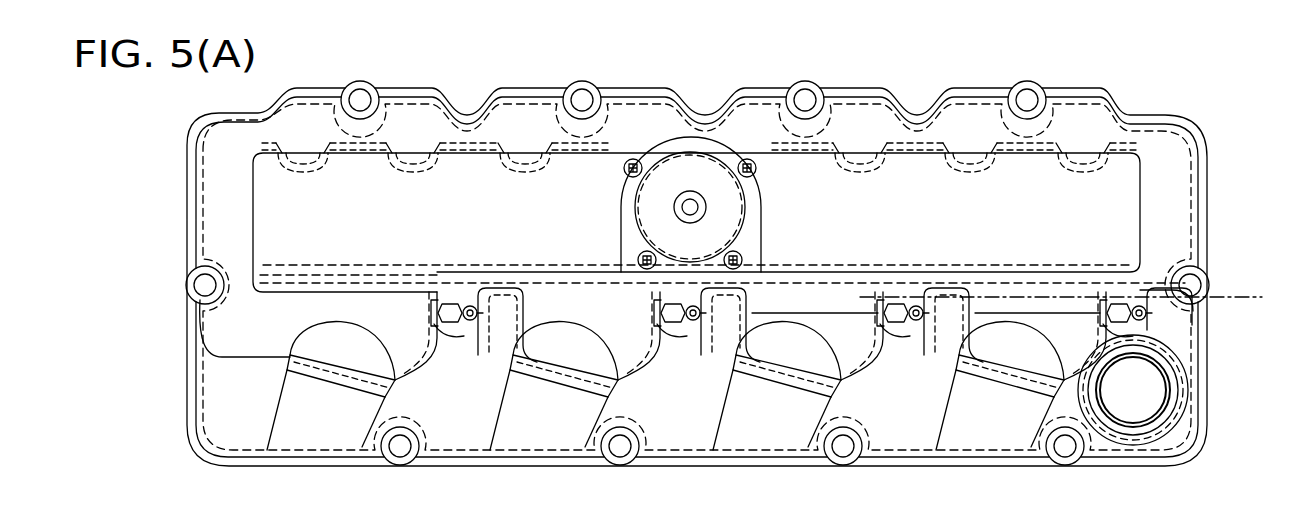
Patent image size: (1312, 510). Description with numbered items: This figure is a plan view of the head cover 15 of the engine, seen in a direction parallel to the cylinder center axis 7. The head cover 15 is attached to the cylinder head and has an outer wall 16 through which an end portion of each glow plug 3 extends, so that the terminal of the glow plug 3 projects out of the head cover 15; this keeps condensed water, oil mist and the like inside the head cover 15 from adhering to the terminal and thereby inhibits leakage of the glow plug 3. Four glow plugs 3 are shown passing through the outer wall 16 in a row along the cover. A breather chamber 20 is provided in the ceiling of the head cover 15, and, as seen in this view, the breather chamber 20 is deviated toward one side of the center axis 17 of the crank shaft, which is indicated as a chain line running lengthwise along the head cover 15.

The glow plug 3 is at (469, 300).
The cylinder center axis 7 is at (1043, 296).
The head cover 15 is at (1216, 350).
The outer wall 16 is at (463, 337).
The center axis of a crank shaft 17 is at (1245, 297).
The breather chamber 20 is at (307, 204).